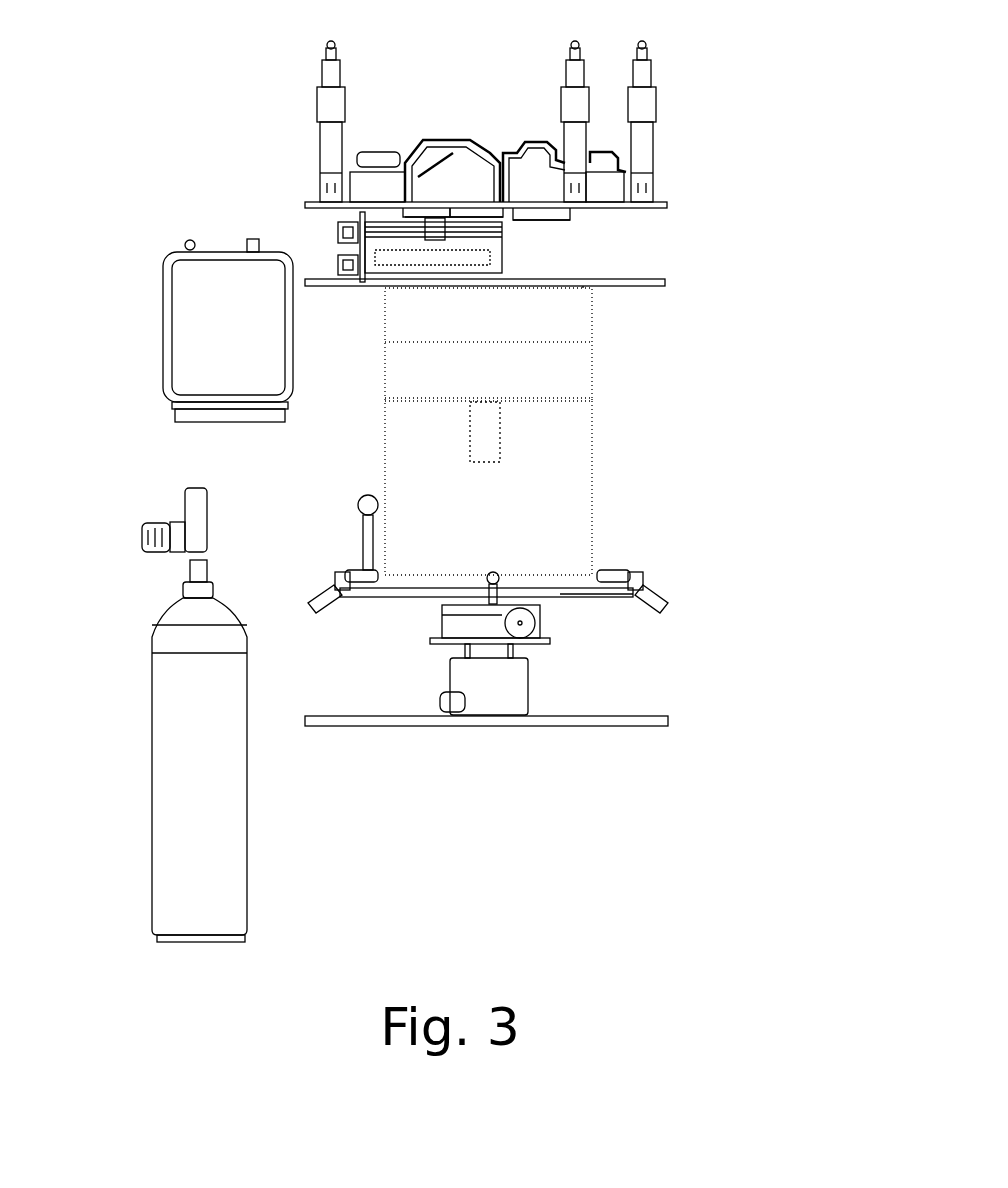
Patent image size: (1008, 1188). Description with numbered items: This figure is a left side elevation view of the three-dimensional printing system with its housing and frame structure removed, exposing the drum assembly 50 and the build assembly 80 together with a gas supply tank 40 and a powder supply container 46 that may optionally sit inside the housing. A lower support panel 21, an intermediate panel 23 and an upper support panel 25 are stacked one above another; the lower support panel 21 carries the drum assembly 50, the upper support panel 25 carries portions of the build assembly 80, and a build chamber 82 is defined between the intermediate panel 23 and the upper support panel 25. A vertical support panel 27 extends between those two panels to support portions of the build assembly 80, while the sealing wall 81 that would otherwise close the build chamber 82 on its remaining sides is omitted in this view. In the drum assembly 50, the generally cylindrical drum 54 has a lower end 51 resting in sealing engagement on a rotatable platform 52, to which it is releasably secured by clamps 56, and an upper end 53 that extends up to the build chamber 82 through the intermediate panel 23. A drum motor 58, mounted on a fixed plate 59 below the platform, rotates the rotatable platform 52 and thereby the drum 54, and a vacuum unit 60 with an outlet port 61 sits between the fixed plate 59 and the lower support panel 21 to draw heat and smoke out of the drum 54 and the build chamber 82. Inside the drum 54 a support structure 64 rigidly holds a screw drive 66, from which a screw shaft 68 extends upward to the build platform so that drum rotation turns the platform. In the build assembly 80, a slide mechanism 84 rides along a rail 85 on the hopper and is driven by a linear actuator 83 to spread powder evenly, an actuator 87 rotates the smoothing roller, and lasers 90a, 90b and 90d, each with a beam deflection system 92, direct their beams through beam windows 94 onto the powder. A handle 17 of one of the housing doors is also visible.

The handle 17 is at (362, 540).
The lower support panel 21 is at (625, 716).
The intermediate panel 23 is at (665, 281).
The upper support panel 25 is at (664, 202).
The vertical support panel 27 is at (362, 214).
The gas supply tank 40 is at (160, 740).
The powder supply container 46 is at (195, 350).
The drum assembly 50 is at (607, 500).
The lower end 51 is at (547, 580).
The rotatable platform 52 is at (602, 595).
The upper end 53 is at (583, 288).
The drum 54 is at (590, 424).
The clamp 56 is at (338, 580).
The drum motor 58 is at (521, 624).
The fixed plate 59 is at (436, 643).
The vacuum unit 60 is at (500, 690).
The outlet port 61 is at (455, 700).
The support structure 64 is at (418, 402).
The screw drive 66 is at (495, 440).
The screw shaft 68 is at (487, 345).
The build assembly 80 is at (676, 149).
The sealing wall 81 is at (447, 268).
The build chamber 82 is at (637, 236).
The linear actuator 83 is at (348, 232).
The slide mechanism 84 is at (435, 218).
The rail 85 is at (387, 225).
The actuator 87 is at (348, 267).
The laser 90a is at (577, 103).
The laser 90b is at (650, 112).
The laser 90d is at (328, 150).
The beam deflection system 92 is at (418, 150).
The beam window 94 is at (410, 228).